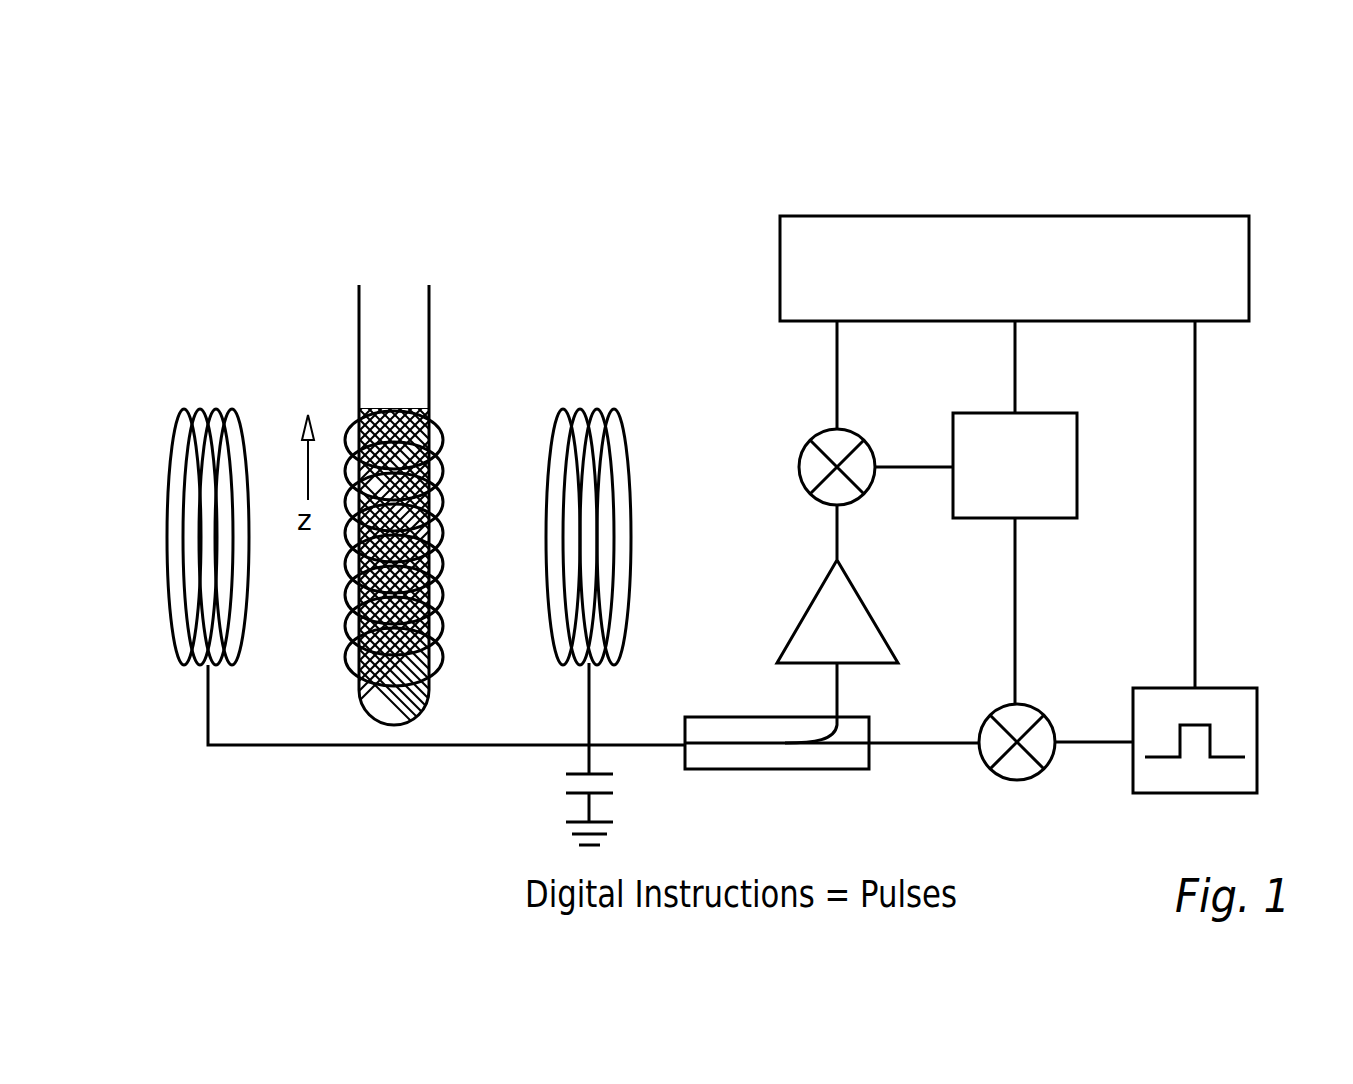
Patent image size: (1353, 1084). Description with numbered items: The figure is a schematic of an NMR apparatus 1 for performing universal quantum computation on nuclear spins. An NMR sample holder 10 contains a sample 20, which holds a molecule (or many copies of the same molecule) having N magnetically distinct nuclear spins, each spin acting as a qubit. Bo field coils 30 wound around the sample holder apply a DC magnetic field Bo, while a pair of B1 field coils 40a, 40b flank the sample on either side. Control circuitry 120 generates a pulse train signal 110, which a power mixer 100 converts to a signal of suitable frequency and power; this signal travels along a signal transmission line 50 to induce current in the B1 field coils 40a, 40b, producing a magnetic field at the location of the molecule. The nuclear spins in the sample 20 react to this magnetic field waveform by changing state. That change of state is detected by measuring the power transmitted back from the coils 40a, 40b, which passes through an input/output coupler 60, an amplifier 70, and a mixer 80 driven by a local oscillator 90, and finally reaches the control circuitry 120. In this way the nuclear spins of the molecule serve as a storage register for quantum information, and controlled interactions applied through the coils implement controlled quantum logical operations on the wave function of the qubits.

The NMR apparatus 1 is at (212, 210).
The NMR sample holder 10 is at (420, 330).
The sample 20 is at (432, 418).
The Bo field coils 30 is at (352, 432).
The B1 field coil 40a is at (175, 425).
The B1 field coil 40b is at (622, 422).
The signal transmission line 50 is at (208, 717).
The input/output coupler 60 is at (797, 772).
The amplifier 70 is at (808, 606).
The mixer 80 is at (822, 432).
The local oscillator 90 is at (1077, 442).
The power mixer 100 is at (1032, 778).
The pulse train signal 110 is at (1230, 688).
The control circuitry 120 is at (1195, 216).